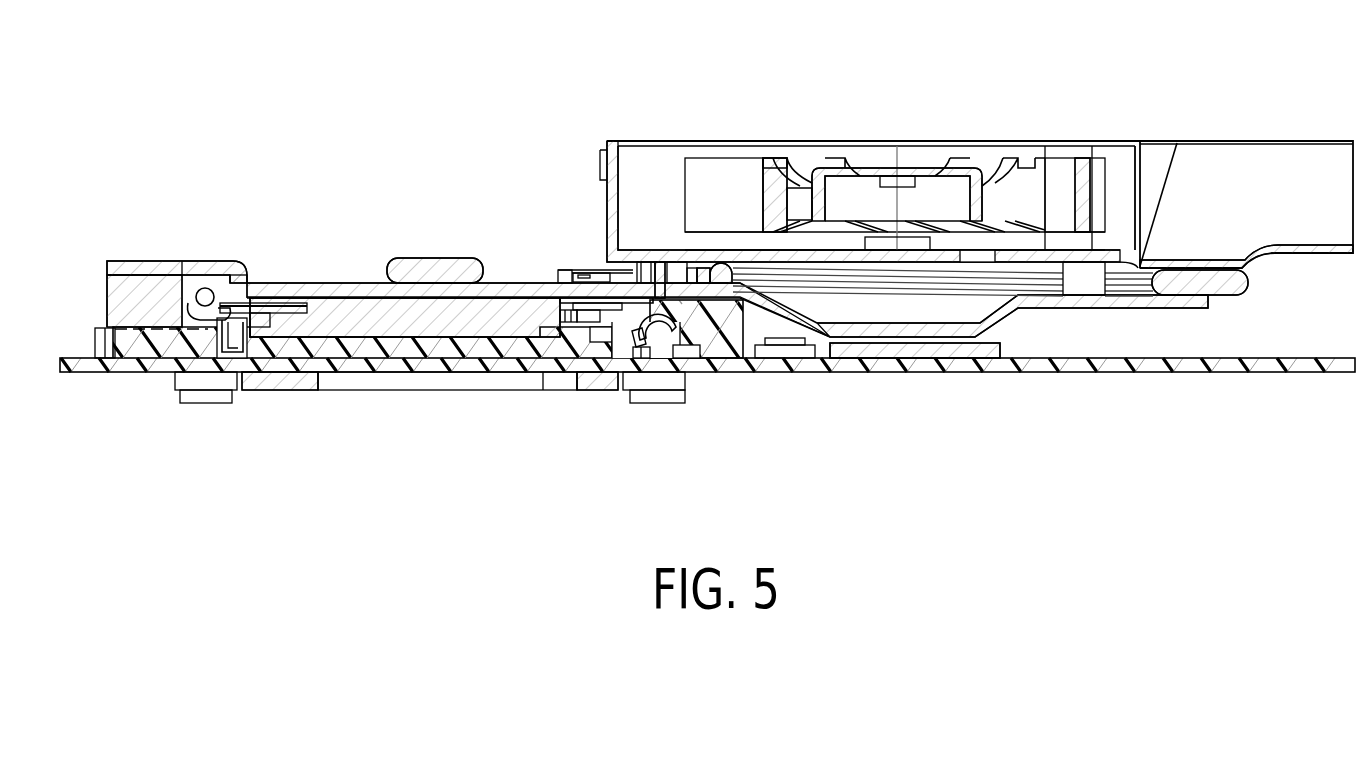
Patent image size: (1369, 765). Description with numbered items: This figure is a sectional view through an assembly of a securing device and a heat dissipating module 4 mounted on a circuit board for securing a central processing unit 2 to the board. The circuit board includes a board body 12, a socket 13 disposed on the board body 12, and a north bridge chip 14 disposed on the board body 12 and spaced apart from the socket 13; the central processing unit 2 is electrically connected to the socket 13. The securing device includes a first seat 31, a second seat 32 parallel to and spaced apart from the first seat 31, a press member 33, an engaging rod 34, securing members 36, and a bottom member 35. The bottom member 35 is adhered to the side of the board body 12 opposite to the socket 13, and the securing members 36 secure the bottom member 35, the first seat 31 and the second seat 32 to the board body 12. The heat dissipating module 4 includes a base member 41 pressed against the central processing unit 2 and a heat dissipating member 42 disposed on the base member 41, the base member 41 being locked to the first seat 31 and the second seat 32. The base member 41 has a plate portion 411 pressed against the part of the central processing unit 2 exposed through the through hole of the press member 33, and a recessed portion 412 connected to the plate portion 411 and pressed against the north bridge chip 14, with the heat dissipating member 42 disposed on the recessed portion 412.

The central processing unit 2 is at (432, 318).
The heat dissipating module 4 is at (976, 167).
The board body 12 is at (493, 365).
The socket 13 is at (383, 347).
The north bridge chip 14 is at (892, 352).
The first seat 31 is at (709, 343).
The second seat 32 is at (212, 335).
The press member 33 is at (291, 322).
The engaging rod 34 is at (205, 290).
The bottom member 35 is at (263, 390).
The securing members 36 is at (207, 403).
The base member 41 is at (340, 272).
The plate portion 411 is at (365, 296).
The recessed portion 412 is at (815, 330).
The heat dissipating member 42 is at (905, 182).